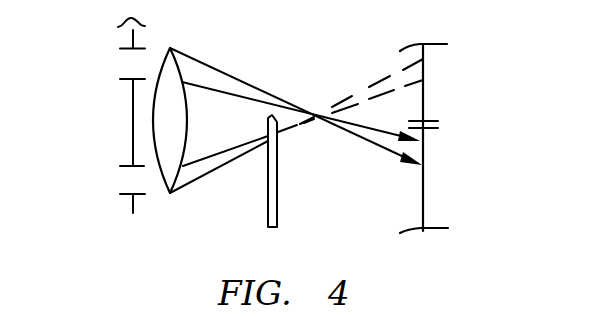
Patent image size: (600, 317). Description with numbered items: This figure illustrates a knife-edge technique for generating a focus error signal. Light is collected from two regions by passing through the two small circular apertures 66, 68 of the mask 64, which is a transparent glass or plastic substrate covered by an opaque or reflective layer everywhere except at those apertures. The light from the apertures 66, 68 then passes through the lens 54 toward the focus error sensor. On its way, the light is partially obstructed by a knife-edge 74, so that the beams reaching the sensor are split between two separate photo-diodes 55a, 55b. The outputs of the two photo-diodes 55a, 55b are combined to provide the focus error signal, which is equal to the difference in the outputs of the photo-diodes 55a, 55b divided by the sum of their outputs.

The mask 64 is at (131, 13).
The aperture 66 is at (130, 61).
The aperture 68 is at (132, 180).
The lens 54 is at (170, 194).
The knife-edge 74 is at (277, 186).
The photo-diode 55a is at (423, 83).
The photo-diode 55b is at (423, 193).